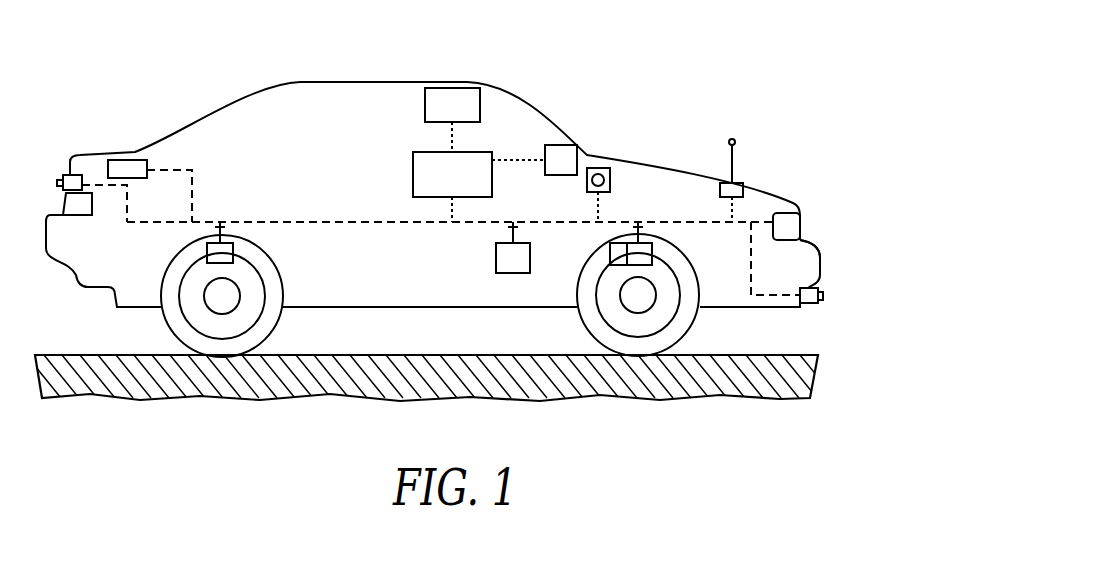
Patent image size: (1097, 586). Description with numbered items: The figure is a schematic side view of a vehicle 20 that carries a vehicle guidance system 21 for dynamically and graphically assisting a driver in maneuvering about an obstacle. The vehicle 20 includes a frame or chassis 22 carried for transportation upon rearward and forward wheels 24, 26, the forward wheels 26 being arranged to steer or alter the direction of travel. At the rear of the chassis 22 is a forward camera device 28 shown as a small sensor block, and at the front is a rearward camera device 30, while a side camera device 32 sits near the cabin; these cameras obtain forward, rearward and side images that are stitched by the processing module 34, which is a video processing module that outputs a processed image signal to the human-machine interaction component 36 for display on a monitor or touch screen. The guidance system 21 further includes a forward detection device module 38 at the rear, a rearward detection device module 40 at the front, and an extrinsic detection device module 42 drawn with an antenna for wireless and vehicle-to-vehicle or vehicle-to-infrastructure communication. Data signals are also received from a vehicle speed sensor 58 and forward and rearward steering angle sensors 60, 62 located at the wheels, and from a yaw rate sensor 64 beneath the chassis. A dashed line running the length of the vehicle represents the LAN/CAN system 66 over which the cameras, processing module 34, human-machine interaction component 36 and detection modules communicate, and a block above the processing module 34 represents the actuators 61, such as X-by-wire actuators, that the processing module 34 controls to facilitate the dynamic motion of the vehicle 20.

The vehicle 20 is at (684, 62).
The vehicle guidance system 21 is at (372, 172).
The frame or chassis 22 is at (822, 263).
The rearward wheels 24 is at (222, 357).
The forward wheels 26 is at (640, 356).
The forward camera device 28 is at (808, 307).
The rearward camera device 30 is at (70, 176).
The side camera device 32 is at (612, 180).
The processing module 34 is at (493, 175).
The human-machine interaction component 36 is at (580, 160).
The forward detection device module 38 is at (796, 228).
The rearward detection device module 40 is at (128, 160).
The extrinsic detection device module 42 is at (735, 165).
The vehicle speed sensor 58 is at (613, 253).
The forward steering angle sensor 60 is at (652, 255).
The actuators 61 is at (480, 105).
The rearward steering angle sensor 62 is at (280, 278).
The yaw rate sensor 64 is at (510, 258).
The LAN/CAN system 66 is at (343, 224).